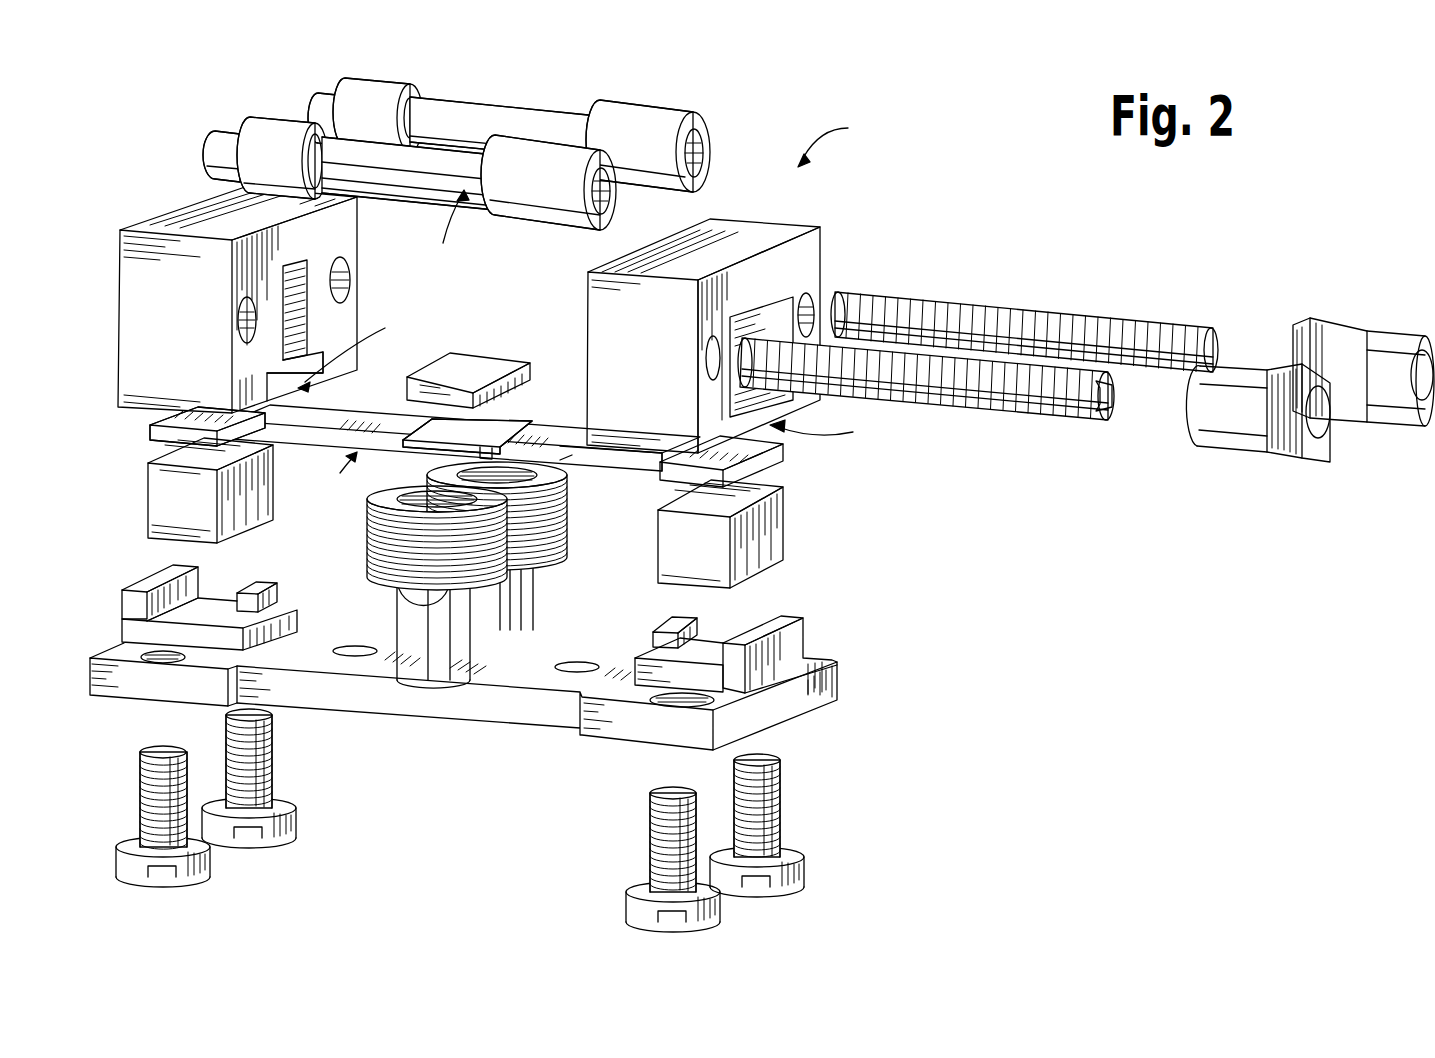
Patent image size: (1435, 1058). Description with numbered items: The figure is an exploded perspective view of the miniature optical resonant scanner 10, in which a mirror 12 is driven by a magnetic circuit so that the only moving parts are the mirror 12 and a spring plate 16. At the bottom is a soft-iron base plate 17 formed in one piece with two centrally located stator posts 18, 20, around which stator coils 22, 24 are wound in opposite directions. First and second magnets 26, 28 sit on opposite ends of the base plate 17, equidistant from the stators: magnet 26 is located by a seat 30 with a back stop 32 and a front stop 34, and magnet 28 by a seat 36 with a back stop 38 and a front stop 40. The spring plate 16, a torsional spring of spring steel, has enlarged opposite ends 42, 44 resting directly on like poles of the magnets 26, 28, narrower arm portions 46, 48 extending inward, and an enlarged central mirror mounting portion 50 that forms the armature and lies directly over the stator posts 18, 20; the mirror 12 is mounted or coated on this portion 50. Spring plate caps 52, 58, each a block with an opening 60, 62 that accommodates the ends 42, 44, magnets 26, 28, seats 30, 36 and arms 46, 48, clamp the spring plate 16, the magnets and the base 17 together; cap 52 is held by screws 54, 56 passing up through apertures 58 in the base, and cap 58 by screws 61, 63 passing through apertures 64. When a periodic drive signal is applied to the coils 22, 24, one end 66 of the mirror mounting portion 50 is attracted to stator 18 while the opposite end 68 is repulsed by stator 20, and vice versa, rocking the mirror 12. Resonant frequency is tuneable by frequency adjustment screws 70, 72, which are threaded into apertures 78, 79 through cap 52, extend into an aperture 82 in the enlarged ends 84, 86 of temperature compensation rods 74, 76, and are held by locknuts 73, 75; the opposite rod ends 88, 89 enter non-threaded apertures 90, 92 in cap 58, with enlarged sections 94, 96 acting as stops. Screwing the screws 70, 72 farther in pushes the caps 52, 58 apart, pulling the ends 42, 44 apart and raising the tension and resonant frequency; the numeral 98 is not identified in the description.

The optical resonant scanner 10 is at (840, 139).
The mirror 12 is at (475, 357).
The spring plate 16 is at (331, 474).
The base plate 17 is at (517, 713).
The stator post 18 is at (417, 667).
The stator post 20 is at (537, 630).
The stator coil 22 is at (367, 550).
The stator coil 24 is at (567, 493).
The first magnet 26 is at (767, 525).
The second magnet 28 is at (160, 518).
The seat 30 is at (710, 643).
The back stop 32 is at (800, 638).
The front stop 34 is at (652, 632).
The seat 36 is at (145, 632).
The back stop 38 is at (122, 600).
The front stop 40 is at (260, 583).
The enlarged end 42 is at (787, 457).
The enlarged end 44 is at (148, 430).
The arm portion 46 is at (578, 440).
The arm portion 48 is at (323, 420).
The mirror mounting portion 50 is at (447, 428).
The spring plate cap 52 is at (773, 233).
The screw 54 is at (627, 897).
The screw 56 is at (800, 860).
The spring plate cap 58 is at (153, 273).
The opening 60 is at (828, 430).
The screw 61 is at (210, 860).
The opening 62 is at (340, 348).
The screw 63 is at (293, 827).
The aperture 64 is at (167, 663).
The end of mirror mounting portion 66 is at (430, 443).
The end of mirror mounting portion 68 is at (523, 427).
The frequency adjustment screw 70 is at (1037, 417).
The frequency adjustment screw 72 is at (1135, 325).
The locknut 73 is at (1227, 450).
The temperature compensation rod 74 is at (408, 205).
The locknut 75 is at (1397, 330).
The temperature compensation rod 76 is at (542, 120).
The threaded aperture 78 is at (552, 369).
The threaded aperture 79 is at (813, 307).
The aperture 82 is at (705, 150).
The enlarged end 84 is at (570, 216).
The enlarged end 86 is at (667, 113).
The end of rod 88 is at (222, 133).
The end of rod 89 is at (323, 103).
The non-threaded aperture 90 is at (247, 233).
The non-threaded aperture 92 is at (350, 285).
The enlarged section 94 is at (270, 132).
The enlarged section 96 is at (390, 83).
The flat 98 is at (433, 199).